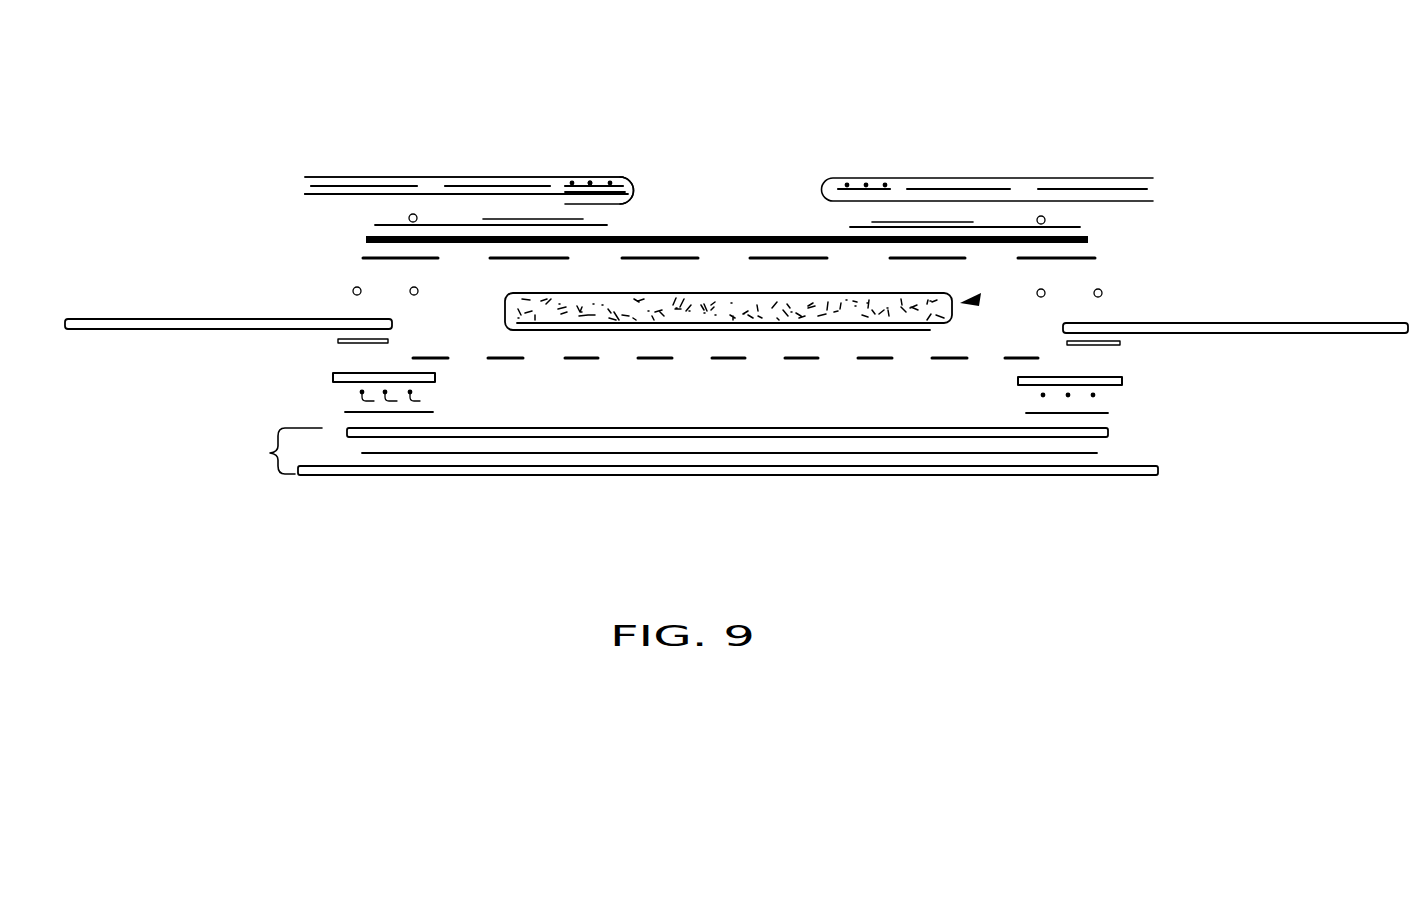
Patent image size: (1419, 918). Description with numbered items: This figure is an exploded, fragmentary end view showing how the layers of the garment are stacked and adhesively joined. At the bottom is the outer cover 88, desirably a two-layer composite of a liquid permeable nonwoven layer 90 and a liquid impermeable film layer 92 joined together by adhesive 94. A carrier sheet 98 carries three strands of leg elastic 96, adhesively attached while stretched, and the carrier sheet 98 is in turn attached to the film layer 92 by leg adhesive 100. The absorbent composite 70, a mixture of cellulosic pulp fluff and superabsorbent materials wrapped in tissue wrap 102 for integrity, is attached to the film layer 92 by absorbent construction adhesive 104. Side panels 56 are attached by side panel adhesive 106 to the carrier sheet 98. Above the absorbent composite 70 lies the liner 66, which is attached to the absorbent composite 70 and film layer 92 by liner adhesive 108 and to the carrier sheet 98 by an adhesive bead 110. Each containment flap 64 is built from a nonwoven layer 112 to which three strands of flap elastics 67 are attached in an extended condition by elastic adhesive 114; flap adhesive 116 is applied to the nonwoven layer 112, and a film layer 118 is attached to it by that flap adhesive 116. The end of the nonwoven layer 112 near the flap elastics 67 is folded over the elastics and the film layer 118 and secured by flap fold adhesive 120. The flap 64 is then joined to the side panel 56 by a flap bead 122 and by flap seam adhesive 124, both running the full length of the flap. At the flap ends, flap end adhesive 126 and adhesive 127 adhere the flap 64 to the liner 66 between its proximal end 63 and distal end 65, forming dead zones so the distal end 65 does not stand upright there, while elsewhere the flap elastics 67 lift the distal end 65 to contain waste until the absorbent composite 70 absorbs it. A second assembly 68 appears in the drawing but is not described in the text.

The side panels 56 is at (137, 318).
The proximal end 63 is at (305, 176).
The containment flap 64 is at (318, 140).
The distal end 65 is at (633, 180).
The liner 66 is at (747, 235).
The flap elastics 67 is at (610, 181).
The second sleeve 68 is at (813, 233).
The absorbent composite 70 is at (980, 299).
The outer cover 88 is at (268, 453).
The nonwoven layer 90 is at (402, 475).
The film layer 92 is at (605, 427).
The adhesive 94 is at (525, 452).
The leg elastic 96 is at (357, 398).
The carrier sheet 98 is at (340, 372).
The leg adhesive 100 is at (423, 412).
The tissue wrap 102 is at (505, 307).
The absorbent construction adhesive 104 is at (725, 358).
The side panel adhesive 106 is at (353, 343).
The liner adhesive 108 is at (372, 258).
The adhesive bead 110 is at (418, 290).
The nonwoven layer 112 is at (423, 176).
The elastic adhesive 114 is at (613, 183).
The flap adhesive 116 is at (387, 185).
The film layer 118 is at (330, 197).
The flap fold adhesive 120 is at (578, 204).
The flap bead 122 is at (353, 290).
The flap seam adhesive 124 is at (408, 216).
The flap end adhesive 126 is at (580, 218).
The adhesive 127 is at (584, 226).